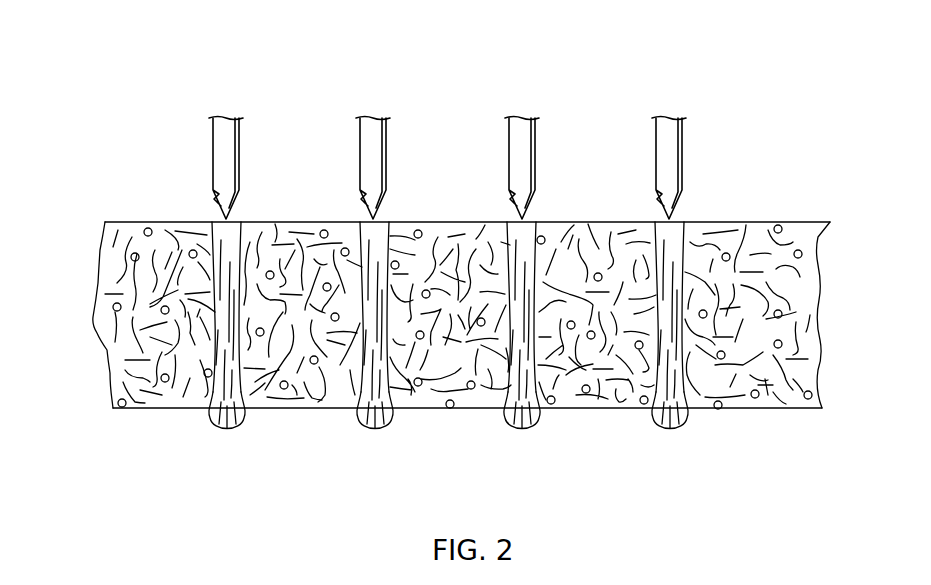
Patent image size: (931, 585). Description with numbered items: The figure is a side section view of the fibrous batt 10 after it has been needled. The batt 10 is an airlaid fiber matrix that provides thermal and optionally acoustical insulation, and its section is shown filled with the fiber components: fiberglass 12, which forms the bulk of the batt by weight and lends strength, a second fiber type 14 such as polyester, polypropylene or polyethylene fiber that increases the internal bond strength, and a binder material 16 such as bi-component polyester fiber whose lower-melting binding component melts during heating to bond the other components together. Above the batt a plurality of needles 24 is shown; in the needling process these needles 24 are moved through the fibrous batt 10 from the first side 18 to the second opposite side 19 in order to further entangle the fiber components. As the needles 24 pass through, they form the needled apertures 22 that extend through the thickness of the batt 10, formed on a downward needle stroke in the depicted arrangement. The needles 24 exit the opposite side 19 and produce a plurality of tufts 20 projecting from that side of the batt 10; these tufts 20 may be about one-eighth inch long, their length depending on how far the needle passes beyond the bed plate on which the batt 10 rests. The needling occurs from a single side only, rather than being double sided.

The fibrous batt 10 is at (269, 85).
The fiberglass 12 is at (273, 222).
The second fiber type 14 is at (324, 222).
The binder material 16 is at (310, 222).
The first side 18 is at (130, 222).
The second opposite side 19 is at (128, 408).
The tufts 20 is at (209, 456).
The needled apertures 22 is at (689, 208).
The needles 24 is at (191, 150).